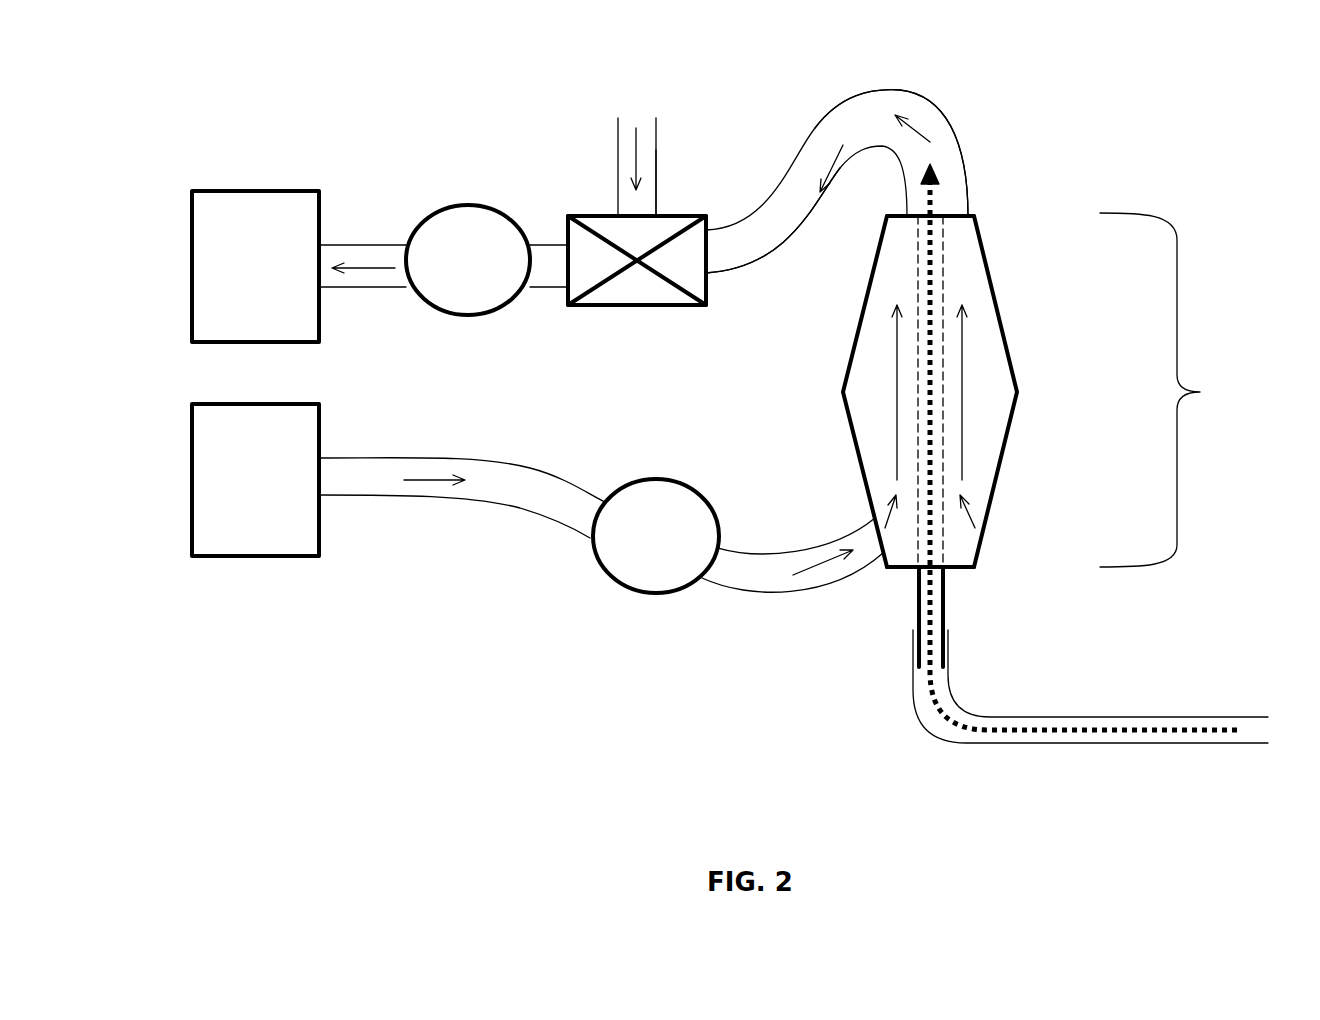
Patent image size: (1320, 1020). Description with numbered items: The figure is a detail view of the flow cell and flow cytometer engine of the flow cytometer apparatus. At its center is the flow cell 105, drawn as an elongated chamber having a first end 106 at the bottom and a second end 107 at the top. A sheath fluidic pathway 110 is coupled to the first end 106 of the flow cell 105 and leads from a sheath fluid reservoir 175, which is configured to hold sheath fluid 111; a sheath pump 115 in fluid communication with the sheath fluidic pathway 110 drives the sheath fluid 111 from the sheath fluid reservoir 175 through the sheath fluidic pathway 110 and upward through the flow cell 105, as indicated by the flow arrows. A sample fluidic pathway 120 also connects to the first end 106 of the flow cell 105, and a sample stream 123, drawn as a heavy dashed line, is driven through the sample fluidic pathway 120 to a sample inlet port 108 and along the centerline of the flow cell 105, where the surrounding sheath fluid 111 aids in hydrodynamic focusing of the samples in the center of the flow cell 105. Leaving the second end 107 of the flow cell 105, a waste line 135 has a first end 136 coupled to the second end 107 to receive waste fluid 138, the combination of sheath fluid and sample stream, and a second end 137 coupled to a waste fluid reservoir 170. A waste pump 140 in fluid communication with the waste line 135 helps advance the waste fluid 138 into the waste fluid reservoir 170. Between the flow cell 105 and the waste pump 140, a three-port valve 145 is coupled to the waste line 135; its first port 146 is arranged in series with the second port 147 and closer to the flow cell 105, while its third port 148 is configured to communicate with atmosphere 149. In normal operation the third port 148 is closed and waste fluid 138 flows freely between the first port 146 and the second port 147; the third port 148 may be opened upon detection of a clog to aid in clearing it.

The flow cell 105 is at (1079, 390).
The first end 106 is at (993, 547).
The second end 107 is at (991, 223).
The sample inlet port 108 is at (957, 598).
The sheath fluidic pathway 110 is at (514, 526).
The sheath fluid 111 is at (982, 387).
The sheath pump 115 is at (633, 552).
The sample fluidic pathway 120 is at (1028, 695).
The sample stream 123 is at (945, 262).
The waste line 135 is at (767, 281).
The first end 136 is at (983, 179).
The second end 137 is at (339, 210).
The waste fluid 138 is at (927, 108).
The waste pump 140 is at (445, 276).
The three-port valve 145 is at (638, 326).
The first port 146 is at (707, 257).
The second port 147 is at (567, 257).
The third port 148 is at (657, 215).
The atmosphere 149 is at (610, 106).
The waste fluid reservoir 170 is at (255, 266).
The sheath fluid reservoir 175 is at (255, 480).